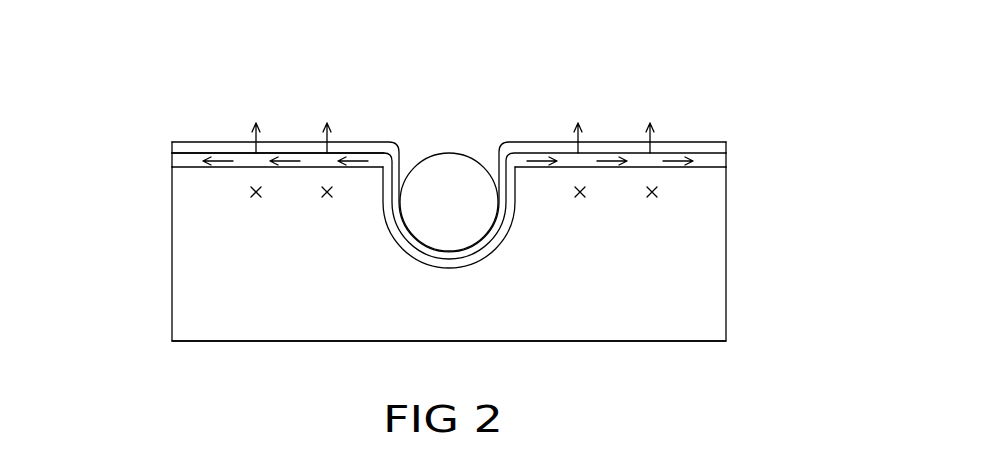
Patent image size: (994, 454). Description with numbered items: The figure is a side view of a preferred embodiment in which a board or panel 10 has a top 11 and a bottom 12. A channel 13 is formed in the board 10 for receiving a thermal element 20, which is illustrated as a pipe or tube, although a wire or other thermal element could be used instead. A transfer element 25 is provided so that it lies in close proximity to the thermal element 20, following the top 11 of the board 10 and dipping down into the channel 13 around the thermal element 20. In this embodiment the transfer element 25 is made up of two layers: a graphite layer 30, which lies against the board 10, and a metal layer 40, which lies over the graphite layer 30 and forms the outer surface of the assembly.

The board 10 is at (725, 268).
The top 11 is at (705, 169).
The bottom 12 is at (700, 342).
The channel 13 is at (492, 255).
The thermal element 20 is at (435, 210).
The transfer element 25 is at (172, 153).
The graphite layer 30 is at (172, 164).
The metal layer 40 is at (223, 142).